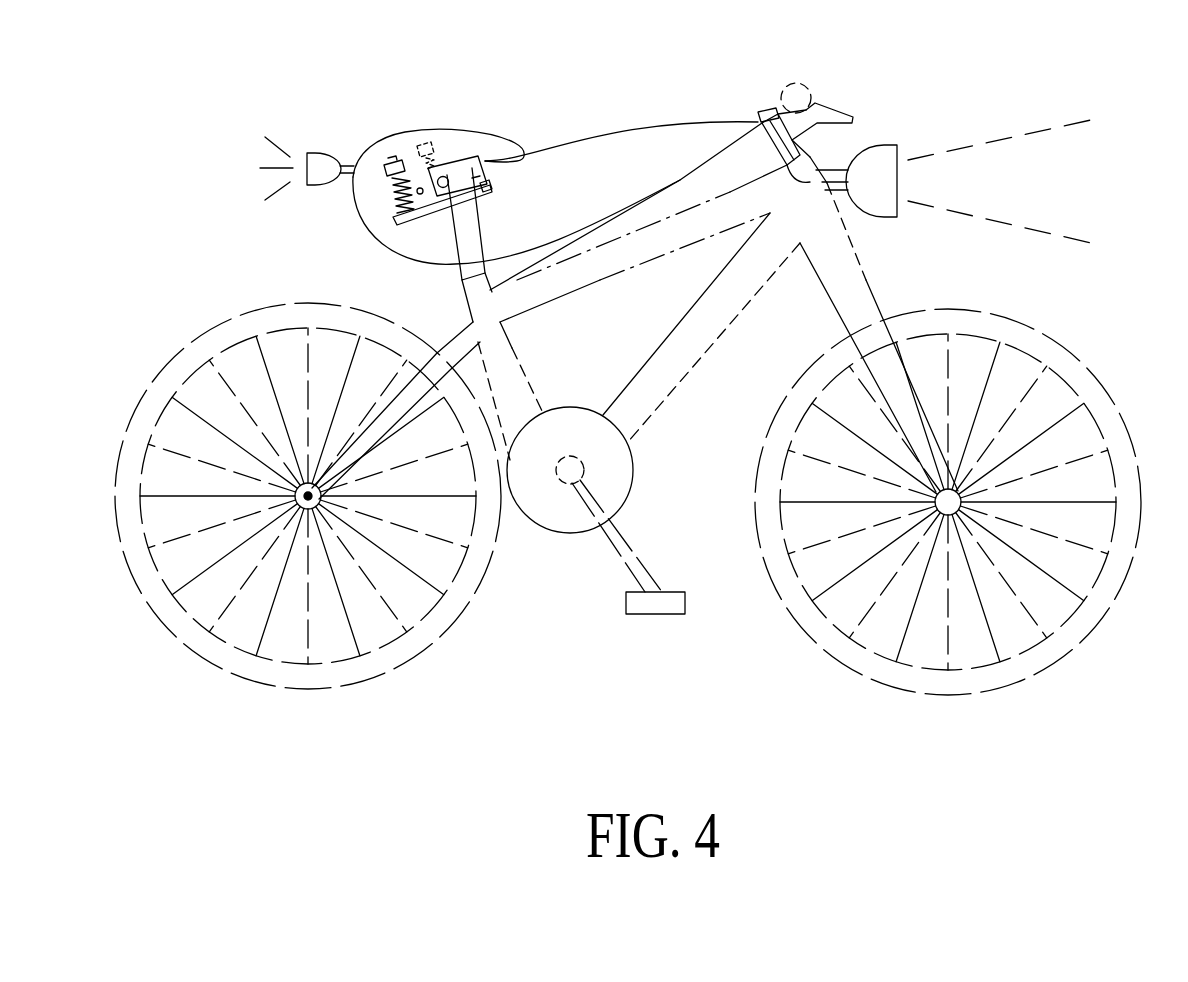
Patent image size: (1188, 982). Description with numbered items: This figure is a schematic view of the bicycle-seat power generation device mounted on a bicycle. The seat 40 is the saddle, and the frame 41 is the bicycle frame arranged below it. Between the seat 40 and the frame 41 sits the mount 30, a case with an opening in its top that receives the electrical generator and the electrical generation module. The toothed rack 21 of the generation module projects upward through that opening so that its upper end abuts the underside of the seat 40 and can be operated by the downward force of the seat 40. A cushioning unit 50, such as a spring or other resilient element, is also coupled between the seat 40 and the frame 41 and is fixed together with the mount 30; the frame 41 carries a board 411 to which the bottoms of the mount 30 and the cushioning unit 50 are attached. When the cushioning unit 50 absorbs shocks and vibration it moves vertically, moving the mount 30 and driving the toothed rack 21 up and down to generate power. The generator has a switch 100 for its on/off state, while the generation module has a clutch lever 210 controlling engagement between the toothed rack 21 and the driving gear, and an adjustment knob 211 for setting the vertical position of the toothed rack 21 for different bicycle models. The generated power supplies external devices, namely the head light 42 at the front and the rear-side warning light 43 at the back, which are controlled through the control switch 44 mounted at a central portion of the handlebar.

The toothed rack 21 is at (424, 142).
The mount 30 is at (484, 170).
The seat 40 is at (465, 140).
The frame 41 is at (455, 268).
The head light 42 is at (878, 165).
The rear-side warning light 43 is at (312, 153).
The control switch 44 is at (763, 112).
The cushioning unit 50 is at (379, 183).
The switch 100 is at (430, 210).
The clutch lever 210 is at (448, 186).
The adjustment knob 211 is at (423, 194).
The board 411 is at (492, 188).